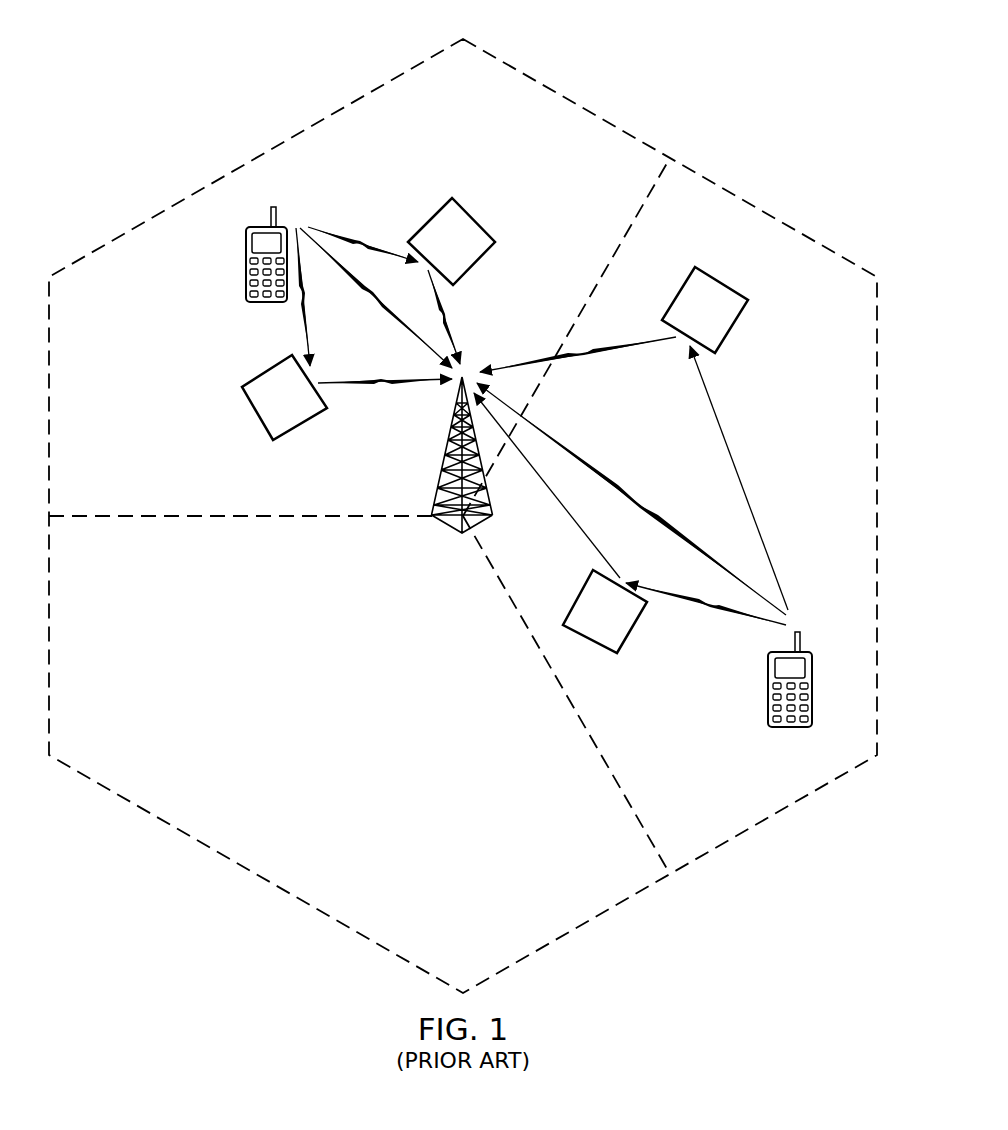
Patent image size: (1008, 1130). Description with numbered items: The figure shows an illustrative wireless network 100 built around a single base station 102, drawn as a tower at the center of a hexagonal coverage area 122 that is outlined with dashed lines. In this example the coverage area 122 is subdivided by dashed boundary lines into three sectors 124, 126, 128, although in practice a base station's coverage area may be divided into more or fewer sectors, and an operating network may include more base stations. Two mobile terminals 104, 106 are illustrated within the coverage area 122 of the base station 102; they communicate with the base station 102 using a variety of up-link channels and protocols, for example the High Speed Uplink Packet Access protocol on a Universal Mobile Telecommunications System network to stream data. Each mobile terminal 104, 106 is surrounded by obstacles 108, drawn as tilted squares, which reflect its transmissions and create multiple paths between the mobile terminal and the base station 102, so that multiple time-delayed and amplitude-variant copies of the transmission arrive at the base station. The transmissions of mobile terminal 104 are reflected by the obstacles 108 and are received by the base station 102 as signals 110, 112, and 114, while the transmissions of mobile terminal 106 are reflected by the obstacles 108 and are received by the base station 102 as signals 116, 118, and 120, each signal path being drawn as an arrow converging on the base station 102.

The wireless network 100 is at (300, 60).
The base station 102 is at (446, 526).
The mobile terminal 104 is at (243, 266).
The mobile terminal 106 is at (767, 702).
The obstacles 108 is at (475, 215).
The signal 110 is at (390, 305).
The signal 112 is at (378, 384).
The signal 114 is at (453, 337).
The signal 116 is at (604, 351).
The signal 118 is at (592, 469).
The signal 120 is at (570, 515).
The coverage area 122 is at (708, 176).
The sector 124 is at (143, 352).
The sector 126 is at (336, 710).
The sector 128 is at (814, 533).